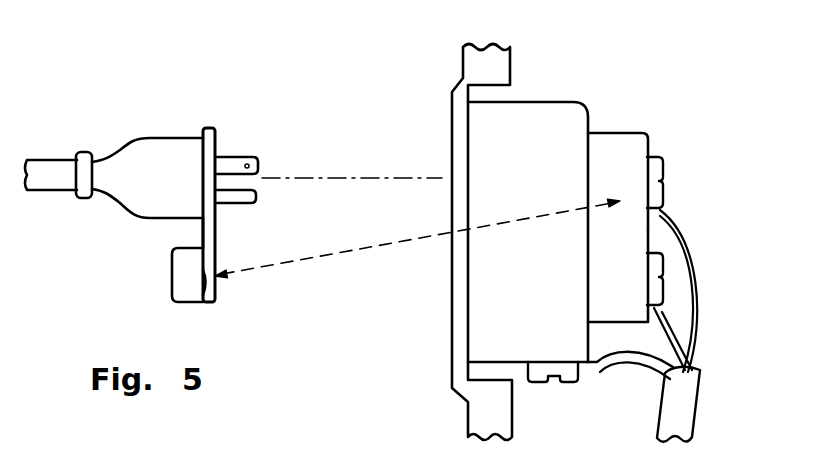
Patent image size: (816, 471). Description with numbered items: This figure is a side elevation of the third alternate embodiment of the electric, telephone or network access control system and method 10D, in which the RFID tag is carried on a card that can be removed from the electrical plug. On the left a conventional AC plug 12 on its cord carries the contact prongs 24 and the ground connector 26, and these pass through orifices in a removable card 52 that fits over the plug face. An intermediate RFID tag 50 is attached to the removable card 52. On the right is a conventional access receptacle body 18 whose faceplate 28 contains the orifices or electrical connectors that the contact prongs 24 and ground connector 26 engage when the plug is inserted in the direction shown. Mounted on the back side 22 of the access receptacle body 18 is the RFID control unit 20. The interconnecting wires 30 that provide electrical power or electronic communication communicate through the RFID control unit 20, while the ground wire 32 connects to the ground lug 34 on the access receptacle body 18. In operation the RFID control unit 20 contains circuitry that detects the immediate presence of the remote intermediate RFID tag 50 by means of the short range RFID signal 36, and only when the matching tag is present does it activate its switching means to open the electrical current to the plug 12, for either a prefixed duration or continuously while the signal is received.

The electric, telephone or network access control system and method 10D is at (282, 108).
The electrical plug 12 is at (139, 193).
The access receptacle body 18 is at (528, 232).
The RFID control unit 20 is at (618, 276).
The back side 22 is at (590, 118).
The contact prongs 24 is at (266, 153).
The ground connector 26 is at (258, 199).
The faceplate 28 is at (450, 110).
The interconnecting wires 30 is at (690, 325).
The ground wire 32 is at (645, 368).
The ground lug 34 is at (540, 385).
The short range RFID signal 36 is at (331, 252).
The intermediate RFID tag 50 is at (185, 273).
The removable card 52 is at (218, 219).